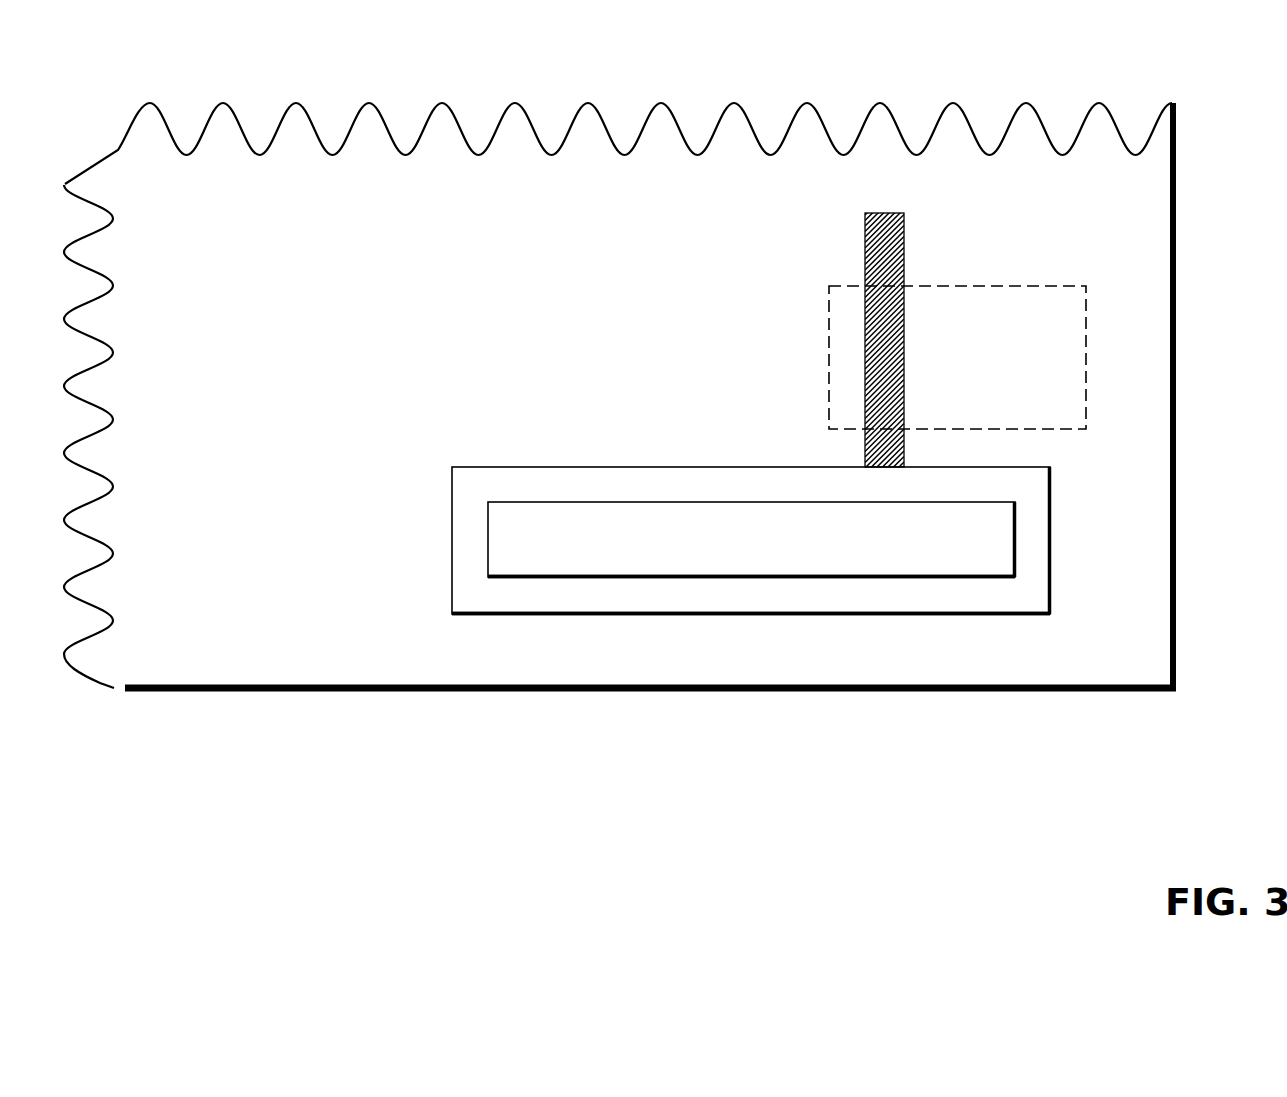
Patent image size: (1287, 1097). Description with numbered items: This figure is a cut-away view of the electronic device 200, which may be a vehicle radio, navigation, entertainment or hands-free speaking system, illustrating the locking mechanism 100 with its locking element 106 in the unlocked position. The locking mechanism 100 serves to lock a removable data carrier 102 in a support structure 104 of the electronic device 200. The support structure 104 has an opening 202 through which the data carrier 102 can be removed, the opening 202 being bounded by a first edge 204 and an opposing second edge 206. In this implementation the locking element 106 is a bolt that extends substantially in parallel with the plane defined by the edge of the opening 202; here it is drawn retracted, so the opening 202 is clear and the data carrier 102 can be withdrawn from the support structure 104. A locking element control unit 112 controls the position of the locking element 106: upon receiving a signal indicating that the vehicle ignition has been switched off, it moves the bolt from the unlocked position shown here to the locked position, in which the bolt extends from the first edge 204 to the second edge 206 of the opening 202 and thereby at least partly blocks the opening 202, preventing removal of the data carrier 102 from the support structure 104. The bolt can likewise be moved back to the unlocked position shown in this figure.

The locking mechanism 100 is at (1160, 191).
The removable data carrier 102 is at (1001, 577).
The support structure 104 is at (442, 603).
The locking element 106 is at (904, 223).
The locking element control unit 112 is at (1076, 429).
The electronic device 200 is at (150, 103).
The opening 202 is at (470, 541).
The first edge 204 is at (547, 467).
The second edge 206 is at (690, 615).